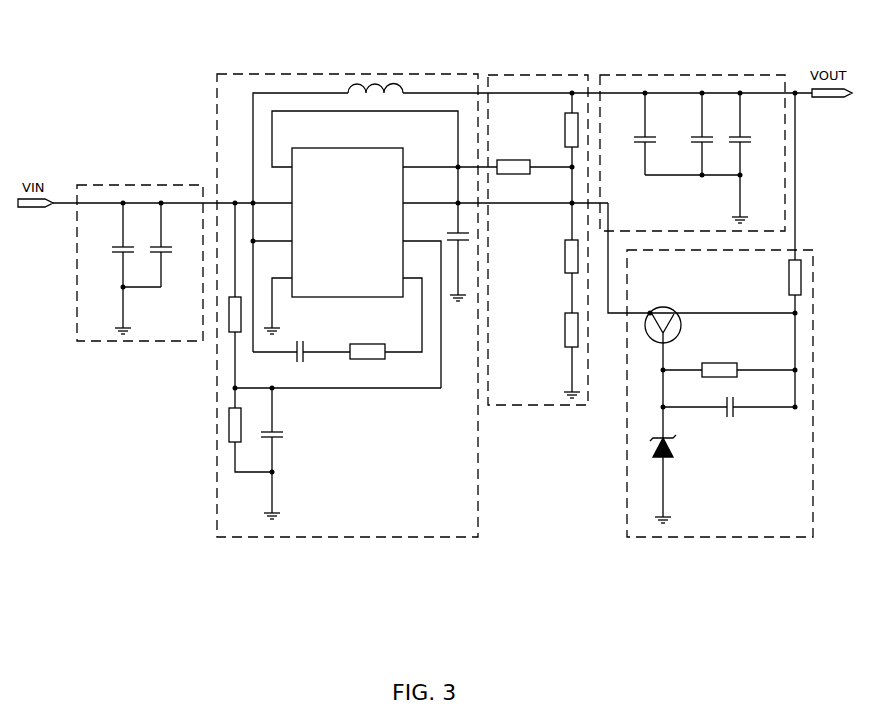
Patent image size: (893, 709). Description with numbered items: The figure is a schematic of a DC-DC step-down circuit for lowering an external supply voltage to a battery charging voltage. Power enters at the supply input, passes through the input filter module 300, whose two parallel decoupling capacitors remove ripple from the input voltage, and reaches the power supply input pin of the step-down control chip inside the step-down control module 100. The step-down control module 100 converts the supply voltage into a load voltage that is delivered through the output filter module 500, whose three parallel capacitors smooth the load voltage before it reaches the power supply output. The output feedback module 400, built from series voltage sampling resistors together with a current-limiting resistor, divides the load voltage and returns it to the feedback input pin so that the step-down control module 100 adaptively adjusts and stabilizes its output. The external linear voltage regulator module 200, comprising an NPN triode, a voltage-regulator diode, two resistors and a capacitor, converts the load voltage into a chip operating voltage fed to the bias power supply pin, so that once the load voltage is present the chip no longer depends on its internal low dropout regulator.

The step-down control module 100 is at (355, 74).
The external linear voltage regulator module 200 is at (800, 250).
The input filter module 300 is at (118, 185).
The output feedback module 400 is at (530, 75).
The output filter module 500 is at (700, 75).